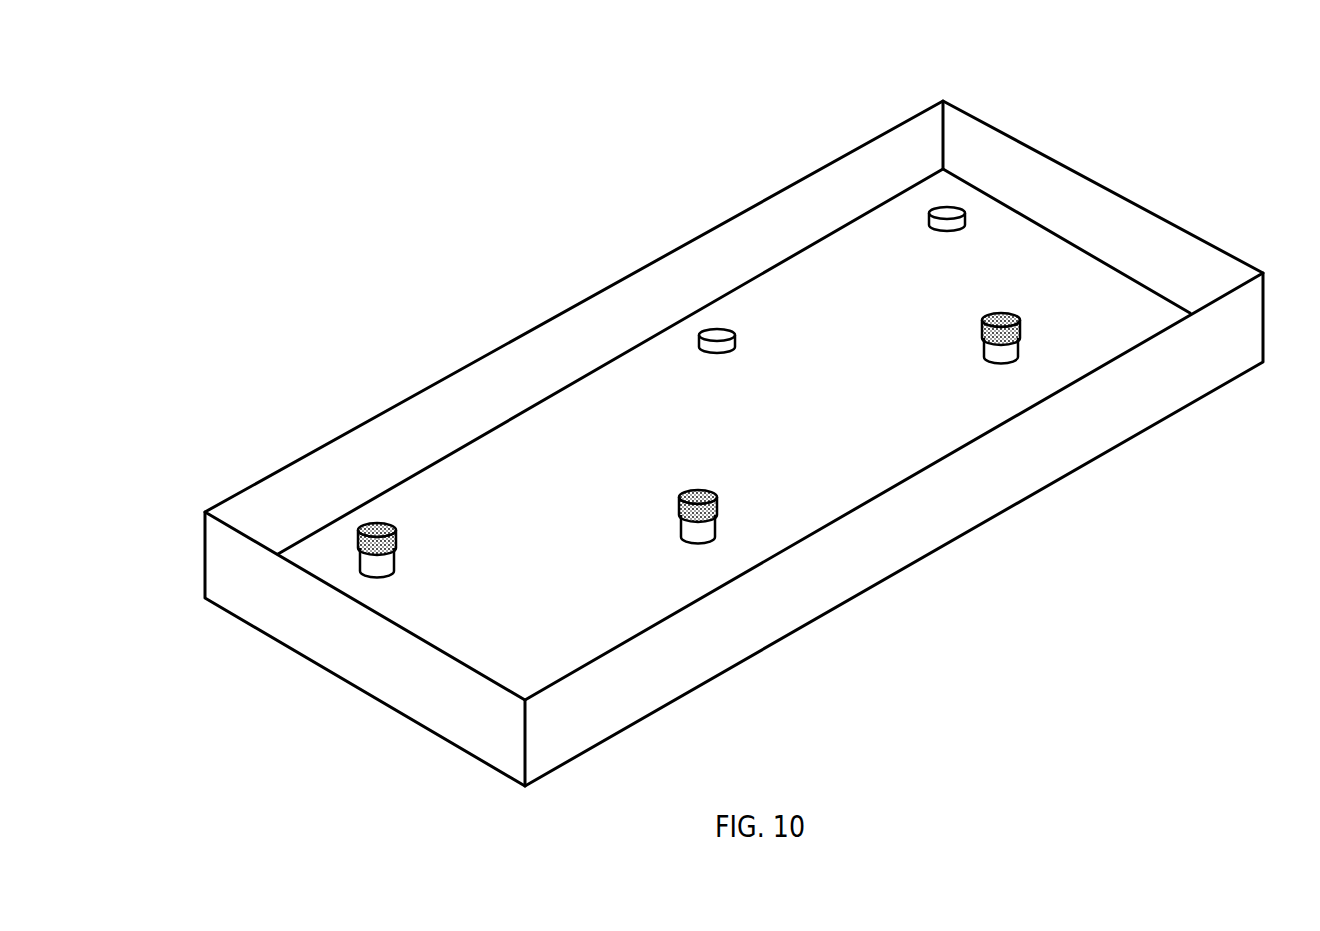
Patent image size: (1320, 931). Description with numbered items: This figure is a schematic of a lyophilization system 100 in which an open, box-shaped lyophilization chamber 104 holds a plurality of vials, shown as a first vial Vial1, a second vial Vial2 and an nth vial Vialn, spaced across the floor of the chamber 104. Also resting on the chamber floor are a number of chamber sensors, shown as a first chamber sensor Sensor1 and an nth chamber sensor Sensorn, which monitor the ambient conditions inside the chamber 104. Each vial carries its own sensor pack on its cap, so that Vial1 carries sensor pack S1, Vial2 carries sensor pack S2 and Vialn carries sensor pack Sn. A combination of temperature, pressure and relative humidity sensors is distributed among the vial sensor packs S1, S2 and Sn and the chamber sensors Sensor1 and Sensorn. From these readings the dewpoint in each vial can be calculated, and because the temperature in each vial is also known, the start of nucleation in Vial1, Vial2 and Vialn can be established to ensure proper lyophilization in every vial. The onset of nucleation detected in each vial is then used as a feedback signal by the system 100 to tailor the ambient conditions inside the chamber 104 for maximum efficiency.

The system 100 is at (263, 151).
The chamber 104 is at (893, 56).
The chamber sensor Sensor1 is at (930, 220).
The chamber sensor Sensorn is at (700, 342).
The vial Vial1 is at (353, 560).
The vial Vial2 is at (678, 540).
The vial Vialn is at (983, 360).
The sensor pack S1 is at (391, 524).
The sensor pack S2 is at (705, 490).
The sensor pack Sn is at (1003, 312).